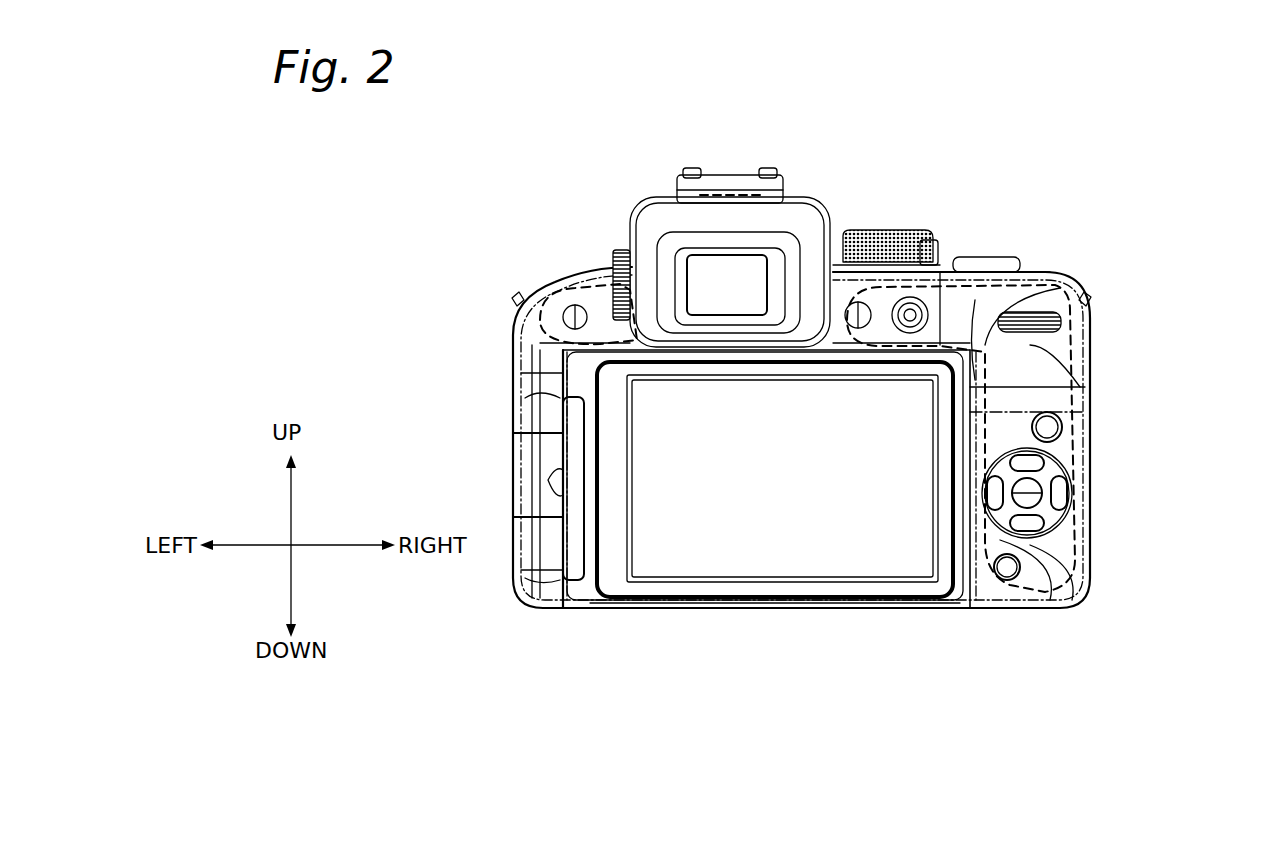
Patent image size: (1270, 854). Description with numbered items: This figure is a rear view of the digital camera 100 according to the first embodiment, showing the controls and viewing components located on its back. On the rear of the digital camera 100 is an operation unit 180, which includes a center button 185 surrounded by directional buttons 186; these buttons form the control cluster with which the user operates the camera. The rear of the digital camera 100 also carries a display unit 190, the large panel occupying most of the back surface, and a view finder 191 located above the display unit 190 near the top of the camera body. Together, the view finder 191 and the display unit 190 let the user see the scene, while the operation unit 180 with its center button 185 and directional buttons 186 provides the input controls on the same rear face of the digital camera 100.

The digital camera 100 is at (1022, 176).
The view finder 191 is at (702, 267).
The display unit 190 is at (668, 553).
The operation unit 180 is at (1035, 588).
The directional buttons 186 is at (1055, 490).
The center button 185 is at (1035, 505).